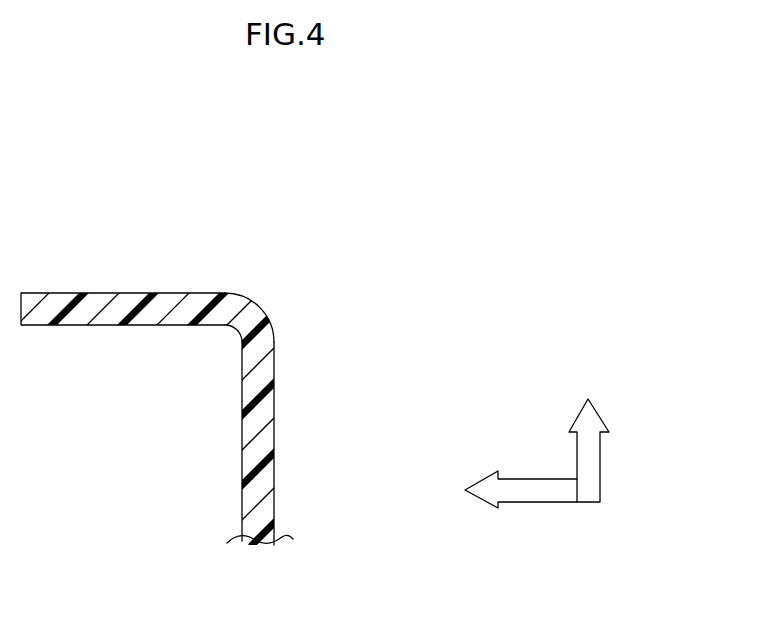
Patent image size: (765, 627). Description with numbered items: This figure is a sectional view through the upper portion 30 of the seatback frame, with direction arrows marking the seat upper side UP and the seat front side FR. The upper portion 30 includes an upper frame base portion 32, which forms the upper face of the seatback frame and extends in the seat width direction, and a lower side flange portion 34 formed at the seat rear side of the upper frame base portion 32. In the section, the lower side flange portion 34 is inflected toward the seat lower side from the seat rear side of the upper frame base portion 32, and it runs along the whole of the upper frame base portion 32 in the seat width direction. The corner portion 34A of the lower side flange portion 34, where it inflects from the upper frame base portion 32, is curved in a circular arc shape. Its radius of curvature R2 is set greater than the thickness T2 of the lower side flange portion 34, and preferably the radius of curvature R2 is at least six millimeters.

The upper portion 30 is at (293, 349).
The upper frame base portion 32 is at (119, 292).
The lower side flange portion 34 is at (277, 457).
The corner portion 34A is at (267, 317).
The radius of curvature R2 is at (223, 338).
The thickness T2 is at (210, 516).
The upward direction arrow UP is at (600, 461).
The front direction arrow FR is at (537, 503).